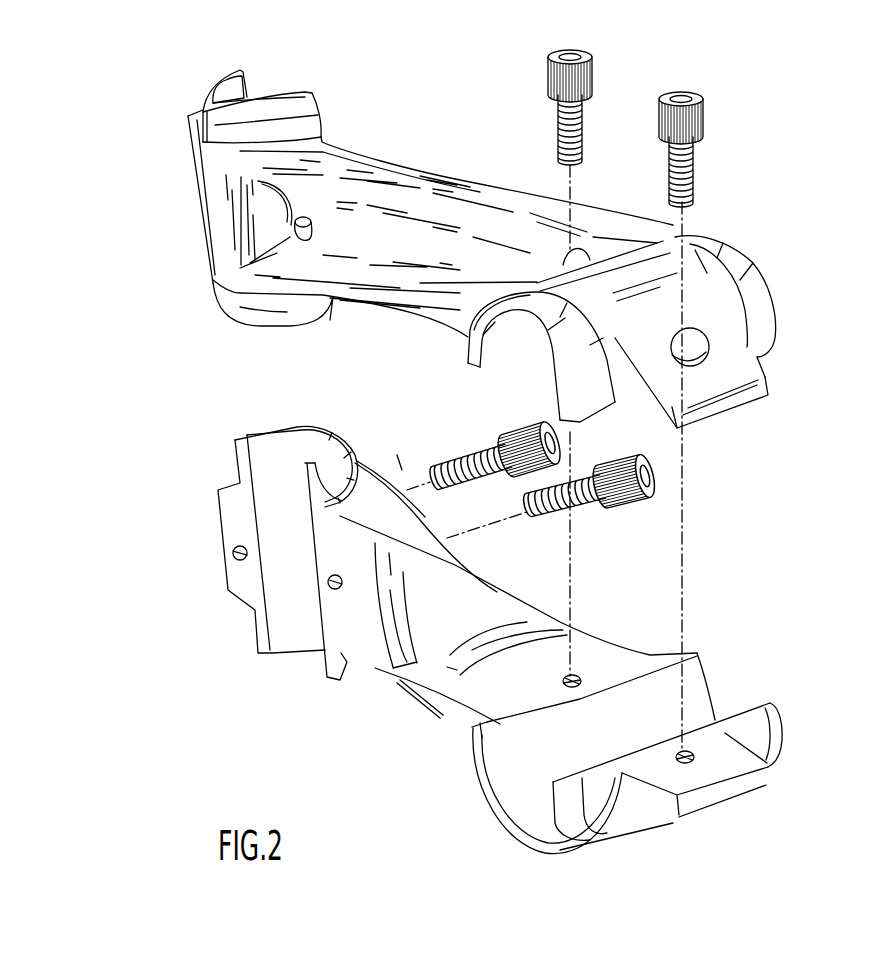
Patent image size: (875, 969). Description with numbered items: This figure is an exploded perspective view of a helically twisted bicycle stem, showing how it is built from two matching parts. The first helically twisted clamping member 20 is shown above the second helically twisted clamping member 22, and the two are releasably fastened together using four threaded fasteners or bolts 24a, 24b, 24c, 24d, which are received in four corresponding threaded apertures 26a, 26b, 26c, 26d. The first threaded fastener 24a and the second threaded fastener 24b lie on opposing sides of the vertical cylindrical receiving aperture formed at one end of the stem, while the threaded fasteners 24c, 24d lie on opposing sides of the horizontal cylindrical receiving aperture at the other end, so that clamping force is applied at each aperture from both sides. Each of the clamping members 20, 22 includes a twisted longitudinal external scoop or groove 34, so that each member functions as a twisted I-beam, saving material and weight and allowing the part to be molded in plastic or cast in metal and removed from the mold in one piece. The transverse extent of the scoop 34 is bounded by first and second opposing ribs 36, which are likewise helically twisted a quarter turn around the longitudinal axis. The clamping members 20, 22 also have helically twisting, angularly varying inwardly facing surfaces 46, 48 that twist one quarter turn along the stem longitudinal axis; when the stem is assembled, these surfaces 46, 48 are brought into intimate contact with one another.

The first helically twisted clamping member 20 is at (207, 97).
The second helically twisted clamping member 22 is at (472, 778).
The first threaded fastener 24a is at (515, 426).
The second threaded fastener 24b is at (645, 495).
The threaded fastener 24c is at (595, 72).
The threaded fastener 24d is at (705, 122).
The threaded aperture 26a is at (186, 155).
The threaded aperture 26b is at (293, 228).
The threaded aperture 26c is at (575, 675).
The threaded aperture 26d is at (700, 352).
The twisted longitudinal external scoop or groove 34 is at (423, 241).
The opposing ribs 36 is at (397, 173).
The inwardly facing surface 46 is at (468, 174).
The inwardly facing surface 48 is at (440, 638).